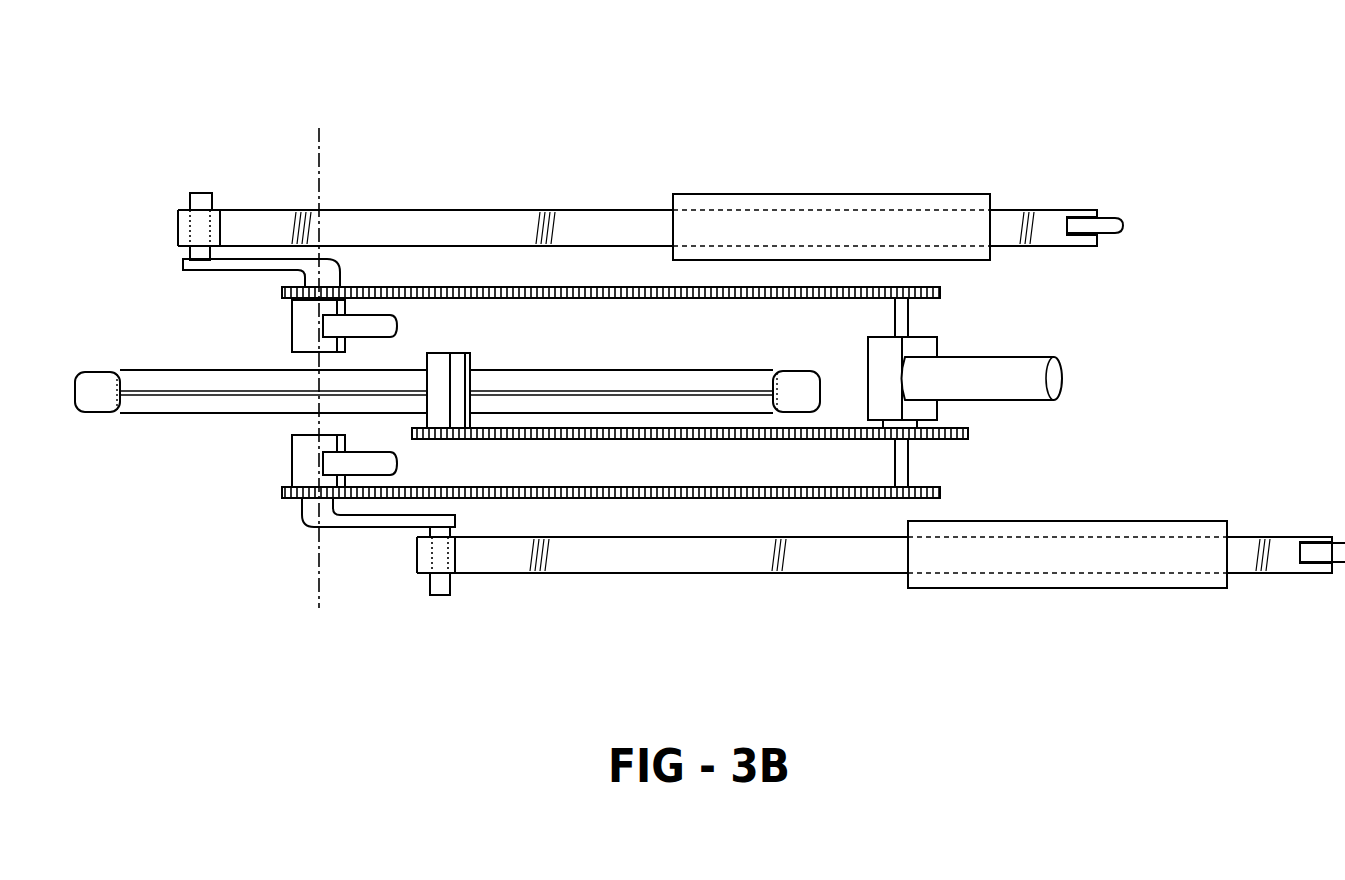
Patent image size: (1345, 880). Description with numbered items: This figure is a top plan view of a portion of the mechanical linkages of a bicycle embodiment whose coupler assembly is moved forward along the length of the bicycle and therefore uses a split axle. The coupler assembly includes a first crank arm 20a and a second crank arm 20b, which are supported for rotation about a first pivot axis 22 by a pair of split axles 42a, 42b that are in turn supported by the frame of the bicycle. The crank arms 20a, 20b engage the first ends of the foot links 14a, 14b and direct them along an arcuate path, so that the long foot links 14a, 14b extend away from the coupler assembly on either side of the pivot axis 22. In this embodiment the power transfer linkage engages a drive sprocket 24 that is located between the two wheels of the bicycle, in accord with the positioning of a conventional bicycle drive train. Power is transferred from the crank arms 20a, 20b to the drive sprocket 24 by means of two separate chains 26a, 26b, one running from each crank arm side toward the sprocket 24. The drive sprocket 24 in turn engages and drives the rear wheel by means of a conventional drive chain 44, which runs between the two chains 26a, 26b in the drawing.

The first pivot axis 22 is at (318, 177).
The foot link 14b is at (477, 225).
The foot link 14a is at (618, 562).
The chain 26b is at (605, 290).
The chain 26a is at (820, 498).
The second crank arm 20b is at (182, 263).
The first crank arm 20a is at (377, 530).
The split axle 42b is at (298, 328).
The split axle 42a is at (297, 453).
The drive chain 44 is at (694, 439).
The drive sprocket 24 is at (943, 439).